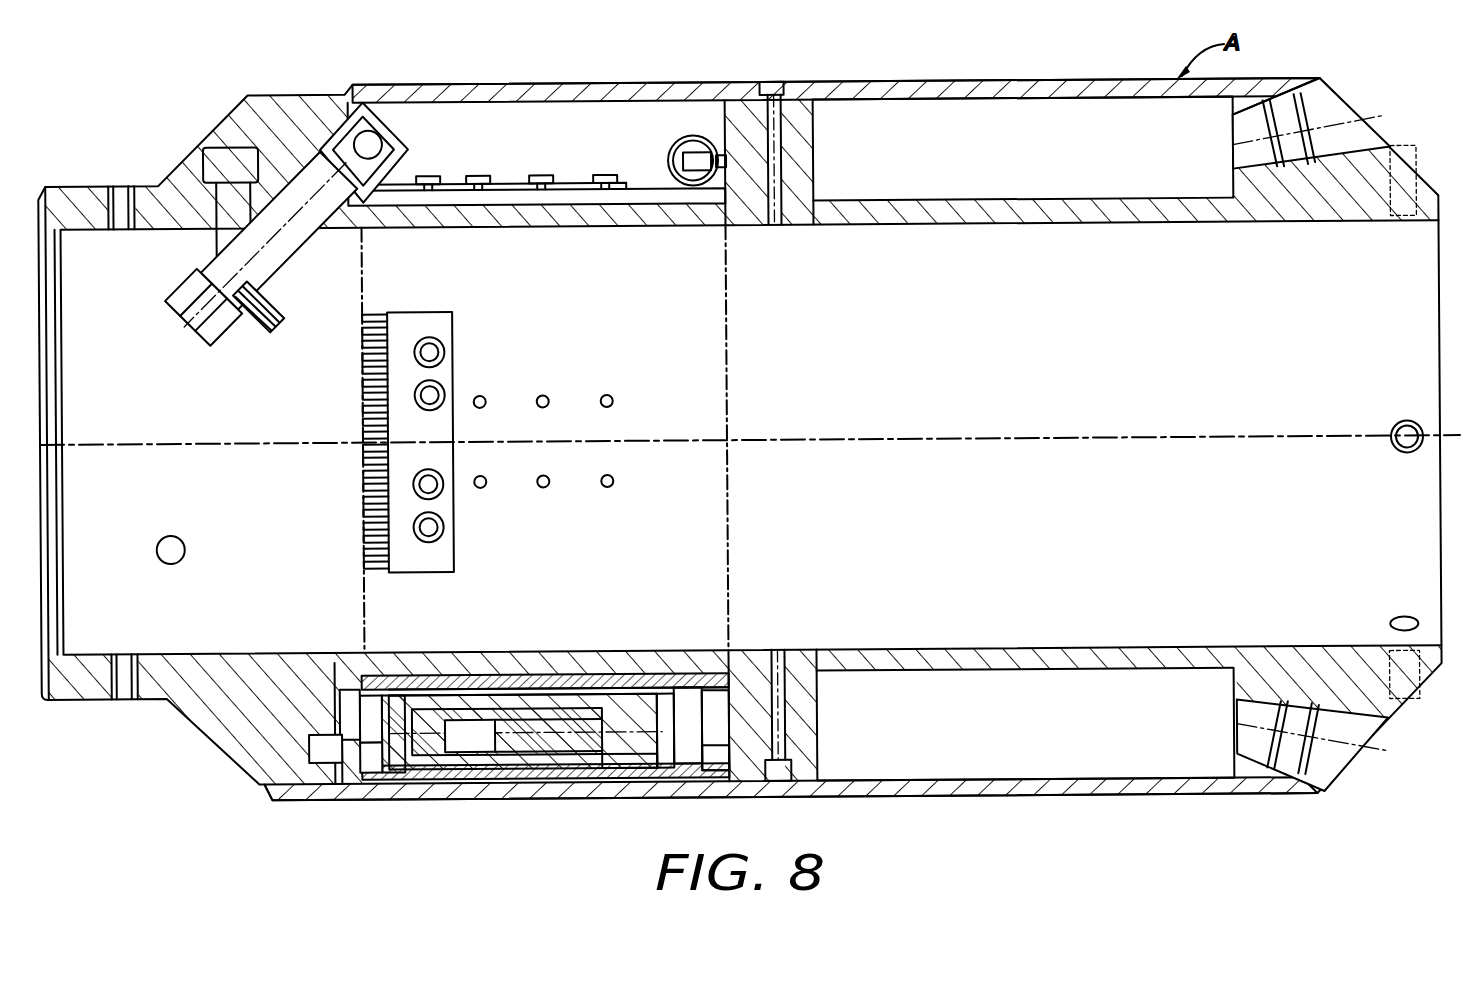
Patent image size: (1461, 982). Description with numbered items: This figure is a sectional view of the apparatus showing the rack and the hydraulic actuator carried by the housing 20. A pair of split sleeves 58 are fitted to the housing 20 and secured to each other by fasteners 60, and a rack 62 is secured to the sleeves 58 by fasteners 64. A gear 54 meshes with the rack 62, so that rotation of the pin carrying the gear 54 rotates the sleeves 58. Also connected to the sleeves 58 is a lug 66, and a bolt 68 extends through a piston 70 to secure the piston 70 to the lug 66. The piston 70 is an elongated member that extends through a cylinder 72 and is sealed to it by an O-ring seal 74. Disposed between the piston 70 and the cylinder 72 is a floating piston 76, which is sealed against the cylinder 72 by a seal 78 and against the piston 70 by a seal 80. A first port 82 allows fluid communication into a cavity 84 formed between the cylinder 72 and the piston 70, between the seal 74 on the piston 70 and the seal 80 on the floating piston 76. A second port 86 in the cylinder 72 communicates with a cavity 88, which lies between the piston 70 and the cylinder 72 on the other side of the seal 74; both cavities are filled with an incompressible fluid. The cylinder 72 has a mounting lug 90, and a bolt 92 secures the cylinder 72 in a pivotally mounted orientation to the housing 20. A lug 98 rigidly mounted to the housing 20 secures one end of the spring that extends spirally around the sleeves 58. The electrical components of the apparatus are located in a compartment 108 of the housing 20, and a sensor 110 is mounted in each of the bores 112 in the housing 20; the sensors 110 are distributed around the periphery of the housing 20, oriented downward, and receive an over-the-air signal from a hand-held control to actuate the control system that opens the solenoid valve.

The housing 20 is at (975, 82).
The gear 54 is at (340, 130).
The split sleeves 58 is at (657, 667).
The fasteners 60 is at (481, 394).
The rack 62 is at (385, 190).
The fasteners 64 is at (445, 345).
The lug 66 is at (747, 667).
The bolt 68 is at (707, 757).
The piston 70 is at (690, 750).
The cylinder 72 is at (460, 690).
The O-ring seal 74 is at (420, 700).
The floating piston 76 is at (613, 767).
The seal 78 is at (618, 690).
The seal 80 is at (600, 700).
The first port 82 is at (527, 703).
The cavity 84 is at (490, 717).
The second port 86 is at (392, 700).
The cavity 88 is at (403, 775).
The mounting lug 90 is at (360, 747).
The bolt 92 is at (330, 760).
The lug 98 is at (722, 168).
The compartment 108 is at (1035, 165).
The sensor 110 is at (1340, 118).
The bores 112 is at (1325, 80).